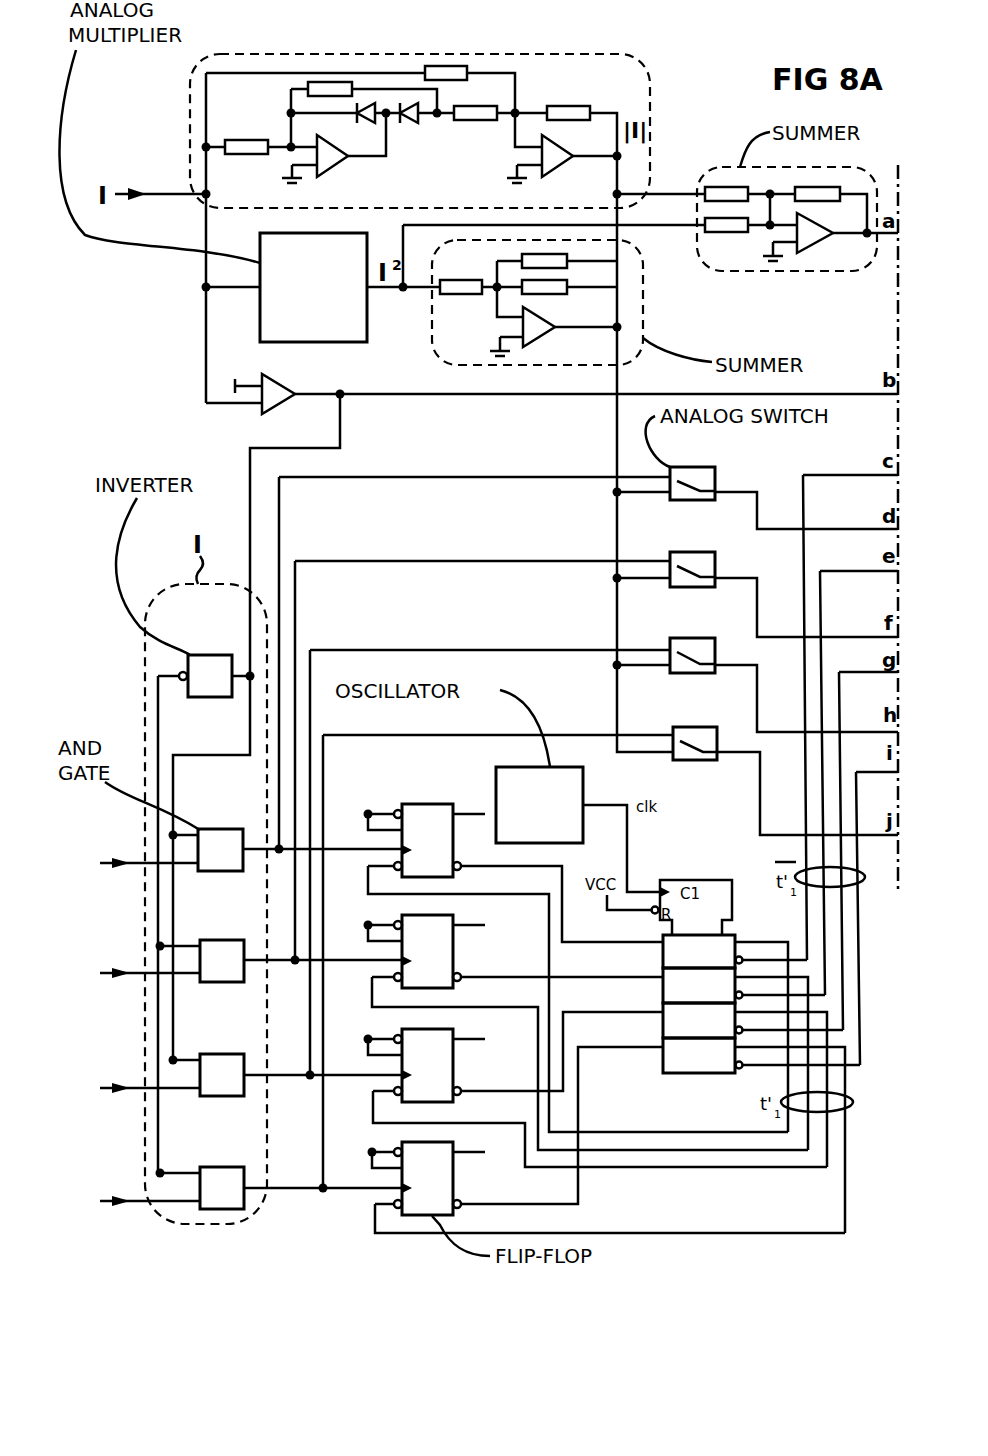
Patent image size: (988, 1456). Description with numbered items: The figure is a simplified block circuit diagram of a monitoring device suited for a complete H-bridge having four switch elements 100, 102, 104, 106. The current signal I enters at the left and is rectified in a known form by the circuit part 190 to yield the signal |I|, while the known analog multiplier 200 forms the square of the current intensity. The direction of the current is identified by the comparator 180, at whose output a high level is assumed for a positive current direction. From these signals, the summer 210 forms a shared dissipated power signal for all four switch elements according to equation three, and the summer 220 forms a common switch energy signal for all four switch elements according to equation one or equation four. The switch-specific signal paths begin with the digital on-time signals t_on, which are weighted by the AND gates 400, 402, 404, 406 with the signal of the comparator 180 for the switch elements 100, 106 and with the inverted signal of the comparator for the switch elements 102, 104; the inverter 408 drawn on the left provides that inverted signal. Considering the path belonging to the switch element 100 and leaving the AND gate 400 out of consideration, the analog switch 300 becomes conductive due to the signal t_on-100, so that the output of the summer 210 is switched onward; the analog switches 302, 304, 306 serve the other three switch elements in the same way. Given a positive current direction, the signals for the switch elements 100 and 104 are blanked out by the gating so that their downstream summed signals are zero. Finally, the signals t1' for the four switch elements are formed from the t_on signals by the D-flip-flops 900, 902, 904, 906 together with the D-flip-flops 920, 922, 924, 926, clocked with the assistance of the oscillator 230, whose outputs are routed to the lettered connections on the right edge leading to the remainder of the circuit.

The circuit part 190 is at (190, 112).
The comparator 180 is at (275, 374).
The analog multiplier 200 is at (340, 342).
The summer 210 is at (643, 310).
The summer 220 is at (783, 272).
The oscillator 230 is at (520, 767).
The analog switch 300 is at (703, 467).
The analog switch 302 is at (688, 552).
The analog switch 304 is at (688, 638).
The analog switch 306 is at (693, 727).
The AND gate 400 is at (215, 829).
The AND gate 402 is at (222, 940).
The AND gate 404 is at (222, 1054).
The AND gate 406 is at (222, 1167).
The inverter 408 is at (205, 655).
The D-flip-flop 900 is at (430, 804).
The D-flip-flop 902 is at (456, 962).
The D-flip-flop 904 is at (456, 1068).
The D-flip-flop 906 is at (456, 1182).
The D-flip-flop 920 is at (663, 953).
The D-flip-flop 922 is at (663, 988).
The D-flip-flop 924 is at (663, 1023).
The D-flip-flop 926 is at (683, 1073).
The switch element 100 is at (136, 852).
The switch element 102 is at (137, 963).
The switch element 104 is at (137, 1078).
The switch element 106 is at (137, 1191).